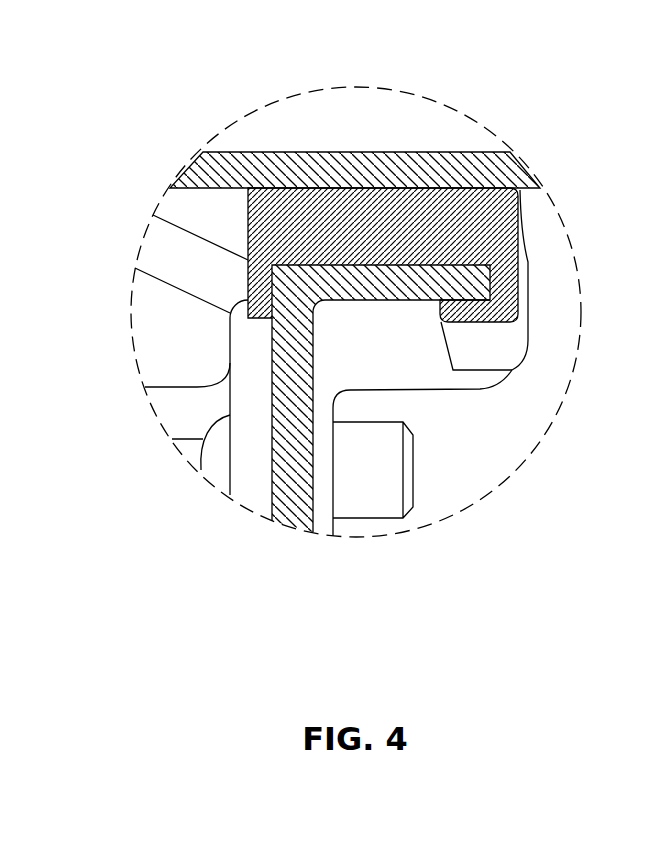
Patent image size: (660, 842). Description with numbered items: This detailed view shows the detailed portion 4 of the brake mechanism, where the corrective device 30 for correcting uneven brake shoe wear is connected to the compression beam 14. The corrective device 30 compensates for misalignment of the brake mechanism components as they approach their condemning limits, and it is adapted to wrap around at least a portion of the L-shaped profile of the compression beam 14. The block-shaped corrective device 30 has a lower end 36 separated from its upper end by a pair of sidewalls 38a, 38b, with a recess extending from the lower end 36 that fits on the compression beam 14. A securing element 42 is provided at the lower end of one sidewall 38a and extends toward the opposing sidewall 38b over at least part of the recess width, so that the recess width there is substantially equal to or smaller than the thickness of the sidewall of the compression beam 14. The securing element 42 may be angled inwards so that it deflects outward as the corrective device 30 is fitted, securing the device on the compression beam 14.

The detailed portion 4 is at (477, 497).
The compression beam 14 is at (284, 475).
The corrective device 30 is at (460, 200).
The lower end 36 is at (260, 320).
The sidewall 38a is at (522, 268).
The sidewall 38b is at (248, 235).
The securing element 42 is at (473, 322).